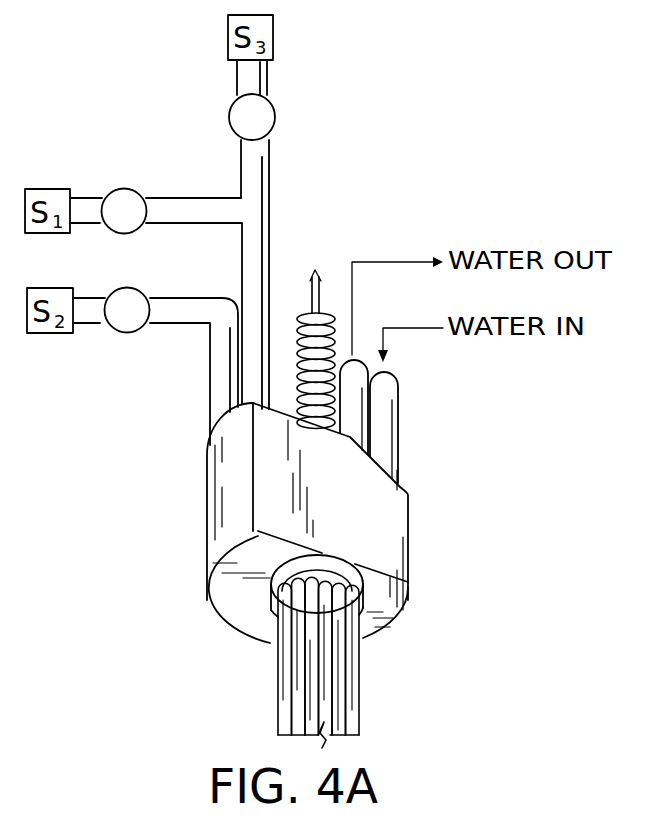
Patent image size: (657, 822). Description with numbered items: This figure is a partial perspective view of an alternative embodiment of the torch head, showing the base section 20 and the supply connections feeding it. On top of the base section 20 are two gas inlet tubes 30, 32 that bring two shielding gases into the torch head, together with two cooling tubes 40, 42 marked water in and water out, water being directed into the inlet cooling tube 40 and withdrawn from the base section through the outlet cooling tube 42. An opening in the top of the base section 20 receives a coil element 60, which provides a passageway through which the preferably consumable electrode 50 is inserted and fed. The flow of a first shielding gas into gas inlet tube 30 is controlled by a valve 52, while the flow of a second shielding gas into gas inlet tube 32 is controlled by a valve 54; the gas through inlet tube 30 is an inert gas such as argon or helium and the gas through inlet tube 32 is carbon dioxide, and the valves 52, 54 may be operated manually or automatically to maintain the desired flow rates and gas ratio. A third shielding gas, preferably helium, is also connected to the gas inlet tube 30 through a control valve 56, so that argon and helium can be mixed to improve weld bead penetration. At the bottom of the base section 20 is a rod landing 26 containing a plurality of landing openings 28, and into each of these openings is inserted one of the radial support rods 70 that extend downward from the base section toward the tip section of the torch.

The base section 20 is at (414, 554).
The rod landing 26 is at (275, 577).
The landing openings 28 is at (353, 608).
The gas inlet tube 30 is at (250, 268).
The gas inlet tube 32 is at (215, 385).
The cooling tube 40 is at (387, 452).
The cooling tube 42 is at (357, 415).
The electrode 50 is at (322, 282).
The valve 52 is at (128, 189).
The valve 54 is at (128, 333).
The control valve 56 is at (275, 117).
The coil element 60 is at (327, 393).
The radial support rods 70 is at (368, 708).